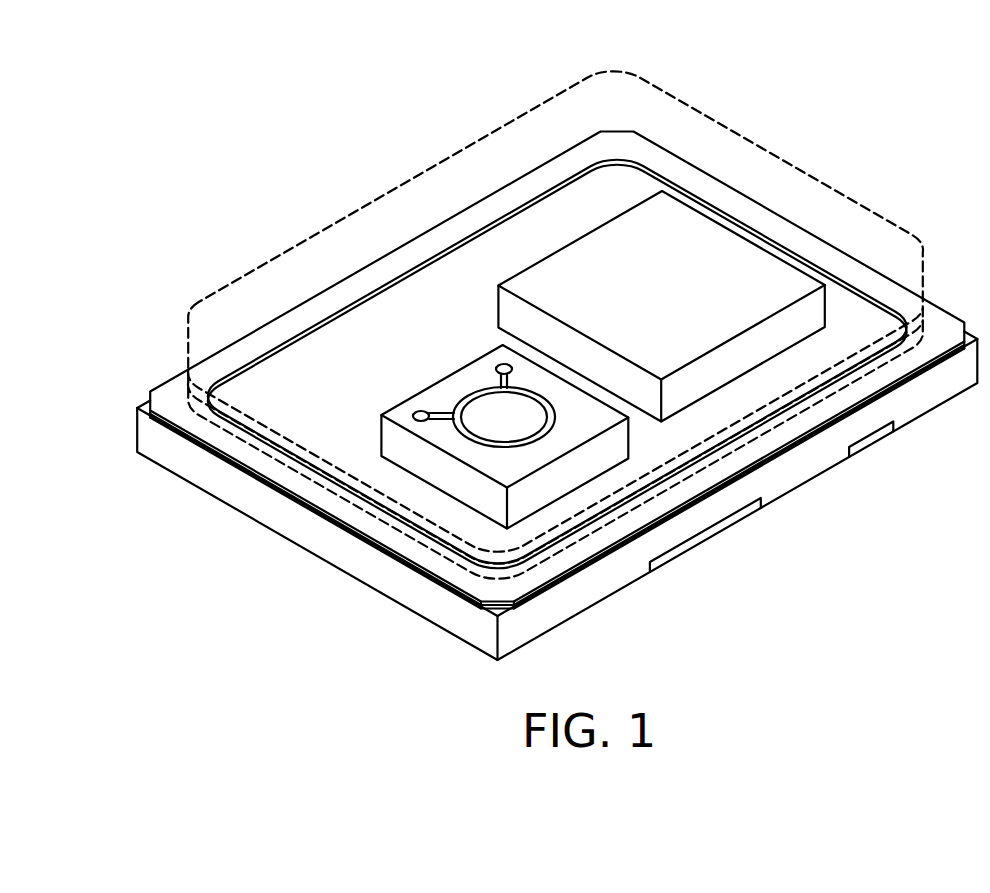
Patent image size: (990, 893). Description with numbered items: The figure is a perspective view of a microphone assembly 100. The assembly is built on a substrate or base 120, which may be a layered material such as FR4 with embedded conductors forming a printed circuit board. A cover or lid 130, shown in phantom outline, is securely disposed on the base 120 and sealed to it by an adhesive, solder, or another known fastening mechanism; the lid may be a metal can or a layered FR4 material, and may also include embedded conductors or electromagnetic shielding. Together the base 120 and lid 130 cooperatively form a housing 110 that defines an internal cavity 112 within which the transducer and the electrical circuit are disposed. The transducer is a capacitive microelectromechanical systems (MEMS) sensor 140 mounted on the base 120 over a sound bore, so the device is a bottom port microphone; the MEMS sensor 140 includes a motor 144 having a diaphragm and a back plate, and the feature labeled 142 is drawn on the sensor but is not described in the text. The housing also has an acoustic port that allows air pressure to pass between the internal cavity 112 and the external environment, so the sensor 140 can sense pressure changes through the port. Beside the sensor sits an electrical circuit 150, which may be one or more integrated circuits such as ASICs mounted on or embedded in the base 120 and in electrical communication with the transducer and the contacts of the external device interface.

The microphone assembly 100 is at (290, 117).
The housing 110 is at (113, 310).
The internal cavity 112 is at (619, 203).
The base 120 is at (790, 467).
The lid 130 is at (525, 113).
The capacitive MEMS sensor 140 is at (491, 475).
The diaphragm ring 142 is at (522, 377).
The motor 144 is at (518, 409).
The electrical circuit 150 is at (737, 247).